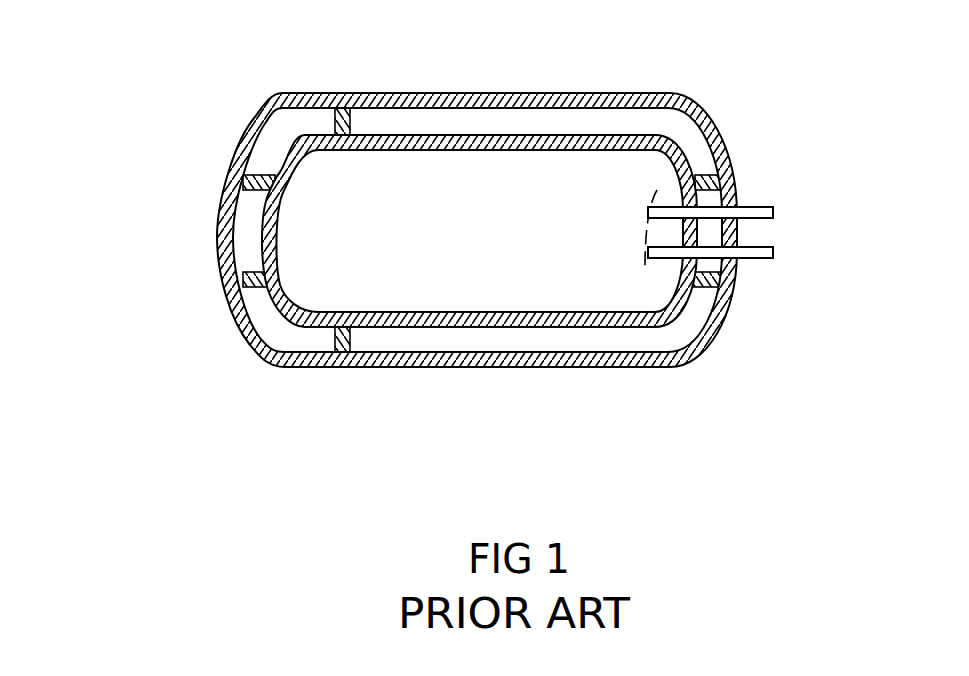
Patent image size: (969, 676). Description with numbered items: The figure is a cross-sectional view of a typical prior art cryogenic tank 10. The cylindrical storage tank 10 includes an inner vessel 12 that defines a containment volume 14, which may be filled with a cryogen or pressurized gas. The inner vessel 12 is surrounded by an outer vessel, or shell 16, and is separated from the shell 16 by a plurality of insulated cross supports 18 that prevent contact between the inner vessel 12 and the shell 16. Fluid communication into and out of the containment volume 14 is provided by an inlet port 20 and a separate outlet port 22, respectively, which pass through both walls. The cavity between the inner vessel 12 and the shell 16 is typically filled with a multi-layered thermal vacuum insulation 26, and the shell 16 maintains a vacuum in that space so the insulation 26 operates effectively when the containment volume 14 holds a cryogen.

The cryogenic tank 10 is at (141, 79).
The inner vessel 12 is at (673, 154).
The containment volume 14 is at (472, 278).
The shell 16 is at (421, 96).
The insulated cross supports 18 is at (620, 117).
The inlet port 20 is at (758, 207).
The outlet port 22 is at (758, 258).
The multi-layered thermal vacuum insulation 26 is at (520, 123).